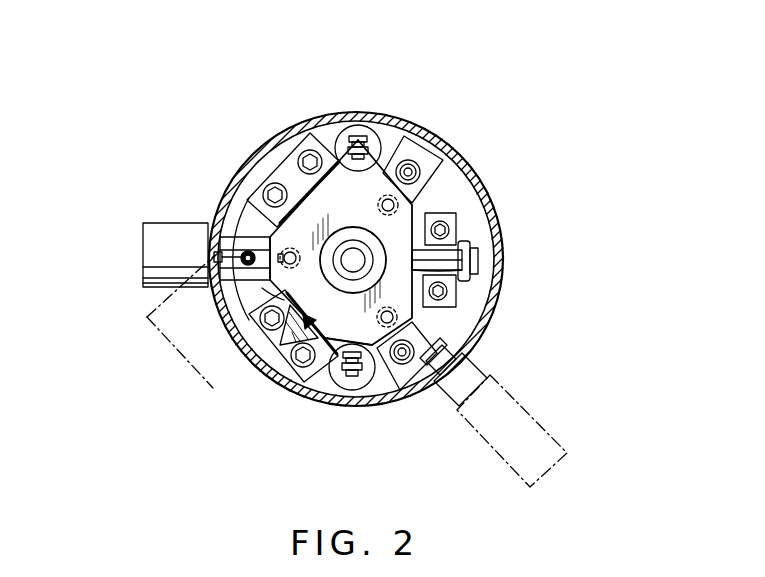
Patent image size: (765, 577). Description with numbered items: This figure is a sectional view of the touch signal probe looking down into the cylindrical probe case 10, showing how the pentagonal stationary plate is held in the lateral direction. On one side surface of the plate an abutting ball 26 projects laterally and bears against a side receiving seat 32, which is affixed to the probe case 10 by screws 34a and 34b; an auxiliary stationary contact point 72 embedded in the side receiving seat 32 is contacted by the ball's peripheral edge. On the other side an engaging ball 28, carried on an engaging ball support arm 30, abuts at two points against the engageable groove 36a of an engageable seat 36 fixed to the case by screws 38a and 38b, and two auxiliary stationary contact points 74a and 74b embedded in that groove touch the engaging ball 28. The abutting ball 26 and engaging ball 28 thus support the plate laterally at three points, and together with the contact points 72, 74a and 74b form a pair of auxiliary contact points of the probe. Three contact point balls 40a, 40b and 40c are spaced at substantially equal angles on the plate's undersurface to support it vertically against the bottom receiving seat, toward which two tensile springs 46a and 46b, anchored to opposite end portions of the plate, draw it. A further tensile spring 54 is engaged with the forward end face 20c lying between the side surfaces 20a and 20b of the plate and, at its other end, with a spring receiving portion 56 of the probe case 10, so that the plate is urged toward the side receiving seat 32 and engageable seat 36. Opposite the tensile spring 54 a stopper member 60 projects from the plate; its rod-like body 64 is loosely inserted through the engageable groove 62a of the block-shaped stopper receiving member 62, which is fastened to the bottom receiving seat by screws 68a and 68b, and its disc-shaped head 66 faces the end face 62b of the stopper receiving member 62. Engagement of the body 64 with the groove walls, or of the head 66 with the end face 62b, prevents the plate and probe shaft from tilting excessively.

The probe case 10 is at (430, 132).
The side surface 20a is at (222, 212).
The side surface 20b is at (228, 307).
The forward end face 20c is at (220, 222).
The abutting ball 26 is at (322, 199).
The engaging ball 28 is at (299, 312).
The engaging ball support arm 30 is at (308, 325).
The side receiving seat 32 is at (314, 135).
The screw 34a is at (262, 194).
The screw 34b is at (300, 152).
The engageable seat 36 is at (297, 378).
The engageable groove 36a is at (312, 305).
The screw 38a is at (304, 370).
The screw 38b is at (270, 356).
The contact point ball 40a is at (307, 244).
The contact point ball 40b is at (382, 313).
The contact point ball 40c is at (383, 208).
The tensile spring 46a is at (364, 135).
The tensile spring 46b is at (352, 388).
The tensile spring 54 is at (214, 240).
The spring receiving portion 56 is at (143, 242).
The stopper member 60 is at (412, 246).
The stopper receiving member 62 is at (478, 226).
The engageable groove 62a is at (478, 249).
The end face 62b is at (470, 293).
The rod-like body 64 is at (436, 309).
The disc-shaped head 66 is at (474, 277).
The screw 68a is at (485, 318).
The screw 68b is at (438, 227).
The auxiliary stationary contact point 72 is at (266, 184).
The auxiliary stationary contact point 74a is at (323, 338).
The auxiliary stationary contact point 74b is at (257, 312).